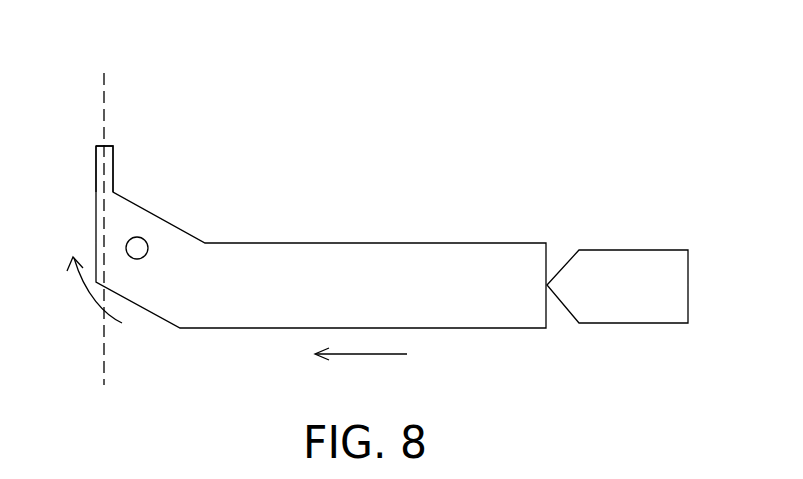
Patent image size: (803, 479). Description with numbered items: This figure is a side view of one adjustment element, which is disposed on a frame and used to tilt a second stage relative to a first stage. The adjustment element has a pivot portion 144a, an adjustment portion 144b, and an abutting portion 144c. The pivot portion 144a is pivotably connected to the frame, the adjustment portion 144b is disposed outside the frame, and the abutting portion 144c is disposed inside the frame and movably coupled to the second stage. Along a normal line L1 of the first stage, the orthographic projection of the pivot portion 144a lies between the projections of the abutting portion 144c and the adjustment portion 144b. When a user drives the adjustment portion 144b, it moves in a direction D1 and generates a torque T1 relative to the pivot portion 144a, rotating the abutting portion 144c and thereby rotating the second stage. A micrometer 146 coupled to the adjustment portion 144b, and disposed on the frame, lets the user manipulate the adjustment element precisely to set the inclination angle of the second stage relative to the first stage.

The pivot portion 144a is at (146, 239).
The adjustment portion 144b is at (384, 271).
The abutting portion 144c is at (116, 164).
The micrometer 146 is at (633, 268).
The normal line L1 is at (103, 358).
The torque T1 is at (83, 290).
The direction D1 is at (361, 368).